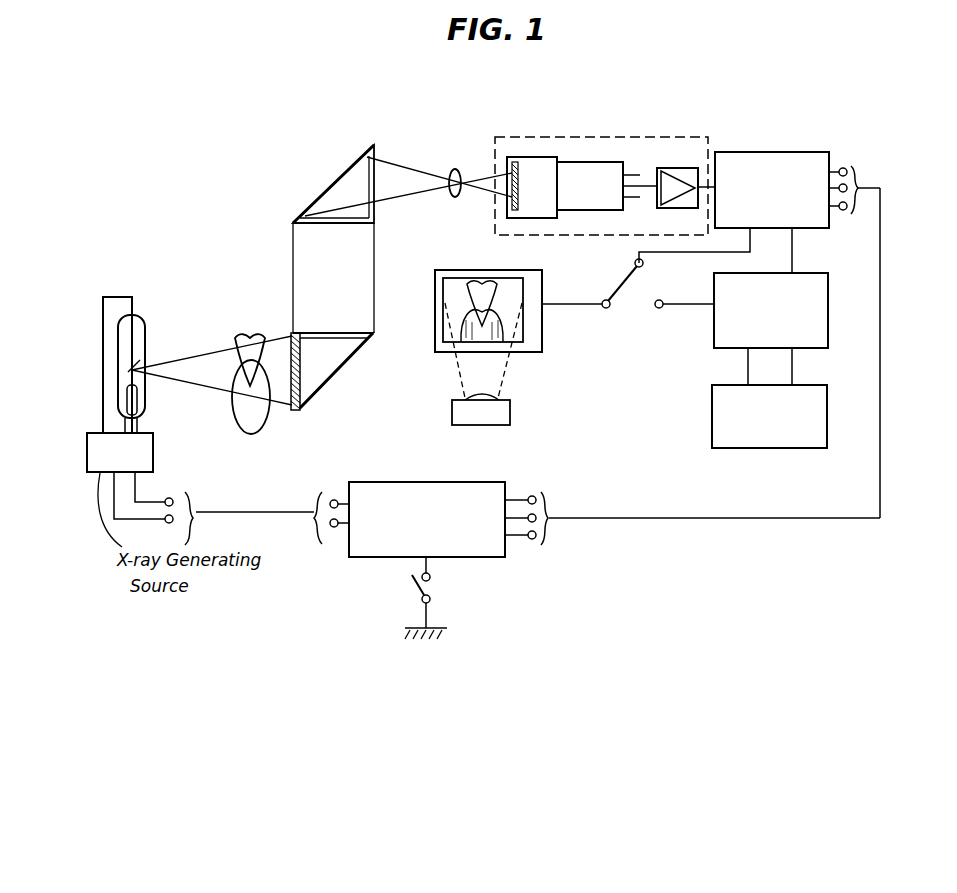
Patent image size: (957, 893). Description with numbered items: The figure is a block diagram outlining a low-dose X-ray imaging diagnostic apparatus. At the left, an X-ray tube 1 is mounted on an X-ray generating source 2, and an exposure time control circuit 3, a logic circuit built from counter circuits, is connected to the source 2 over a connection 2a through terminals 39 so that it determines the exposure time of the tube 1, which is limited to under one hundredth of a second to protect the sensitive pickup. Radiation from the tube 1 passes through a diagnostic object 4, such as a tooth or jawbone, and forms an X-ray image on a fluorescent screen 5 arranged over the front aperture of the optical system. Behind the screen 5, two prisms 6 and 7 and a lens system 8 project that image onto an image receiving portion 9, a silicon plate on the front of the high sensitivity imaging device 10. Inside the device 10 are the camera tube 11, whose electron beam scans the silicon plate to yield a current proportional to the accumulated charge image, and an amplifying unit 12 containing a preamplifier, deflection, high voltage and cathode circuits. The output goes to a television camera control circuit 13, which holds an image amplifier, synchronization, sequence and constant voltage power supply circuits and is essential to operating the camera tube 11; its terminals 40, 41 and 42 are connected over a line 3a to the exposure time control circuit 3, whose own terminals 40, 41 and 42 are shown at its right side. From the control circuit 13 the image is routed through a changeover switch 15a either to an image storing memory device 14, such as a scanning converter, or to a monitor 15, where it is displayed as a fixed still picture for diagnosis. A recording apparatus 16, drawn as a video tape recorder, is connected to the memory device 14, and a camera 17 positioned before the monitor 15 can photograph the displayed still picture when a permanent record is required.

The X-ray tube 1 is at (150, 322).
The X-ray generating source 2 is at (153, 449).
The connecting line 2a is at (257, 494).
The exposure time control circuit 3 is at (430, 482).
The connecting line 3a is at (776, 518).
The diagnostic object 4 is at (250, 337).
The fluorescent screen 5 is at (293, 412).
The prism 6 is at (335, 360).
The prism 7 is at (343, 176).
The lens system 8 is at (455, 169).
The image receiving portion 9 is at (513, 162).
The high sensitivity imaging device 10 is at (608, 160).
The camera tube 11 is at (592, 162).
The amplifying unit 12 is at (682, 168).
The television camera control circuit 13 is at (768, 152).
The image storing memory device 14 is at (818, 286).
The monitor 15 is at (539, 289).
The changeover switch 15a is at (628, 288).
The recording apparatus 16 is at (825, 396).
The camera 17 is at (508, 414).
The terminals 39 is at (176, 498).
The terminal 40 is at (847, 169).
The terminal 41 is at (858, 182).
The terminal 42 is at (858, 198).